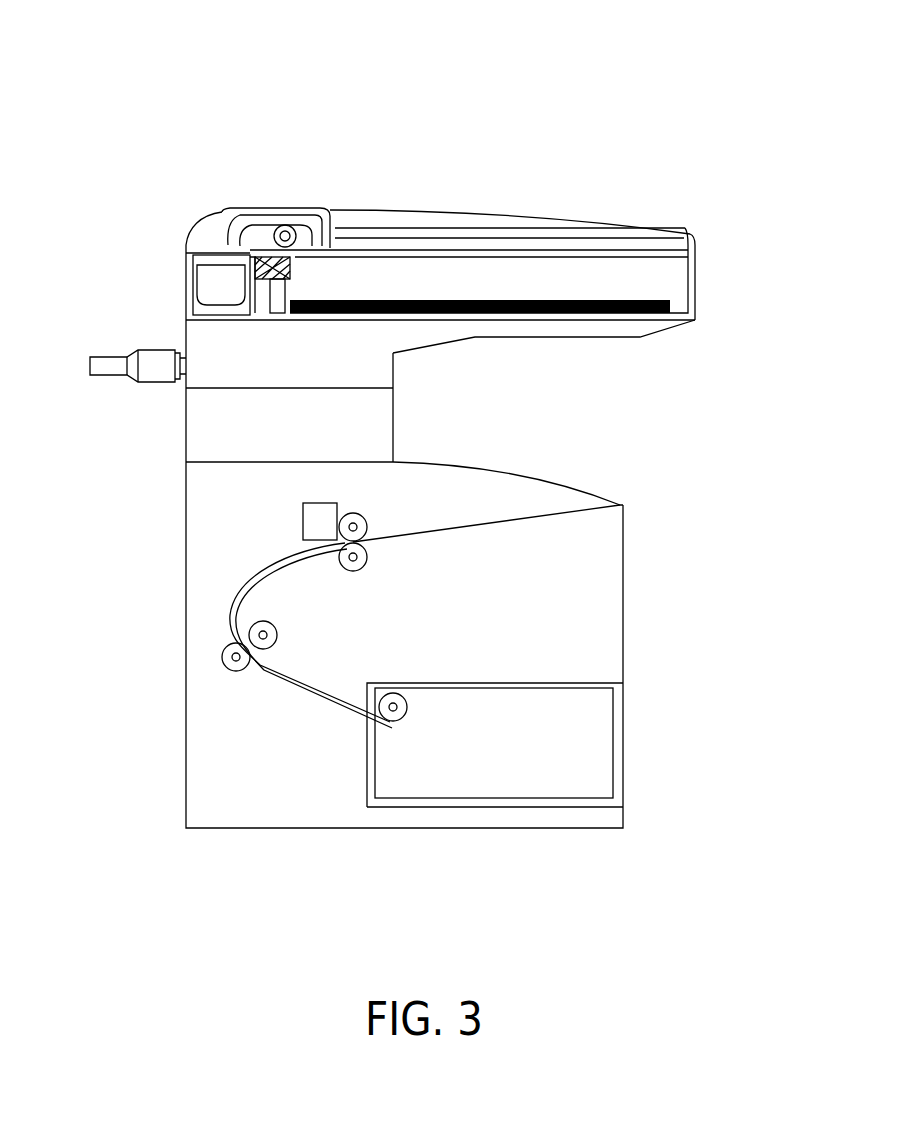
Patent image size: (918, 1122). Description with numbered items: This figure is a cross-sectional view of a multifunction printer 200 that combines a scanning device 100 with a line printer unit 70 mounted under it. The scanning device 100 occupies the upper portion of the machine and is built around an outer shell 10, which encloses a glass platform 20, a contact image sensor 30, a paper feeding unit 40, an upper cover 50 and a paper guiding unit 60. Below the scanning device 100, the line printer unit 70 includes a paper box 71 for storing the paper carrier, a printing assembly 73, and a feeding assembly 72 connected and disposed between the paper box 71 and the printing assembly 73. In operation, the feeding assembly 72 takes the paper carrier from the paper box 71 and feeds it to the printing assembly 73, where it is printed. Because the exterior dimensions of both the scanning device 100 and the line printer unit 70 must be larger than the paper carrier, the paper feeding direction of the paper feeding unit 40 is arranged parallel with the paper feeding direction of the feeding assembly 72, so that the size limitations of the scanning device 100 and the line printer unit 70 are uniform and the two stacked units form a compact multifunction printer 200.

The multifunction printer 200 is at (108, 66).
The scanning device 100 is at (182, 262).
The outer shell 10 is at (587, 320).
The glass platform 20 is at (698, 242).
The contact image sensor 30 is at (302, 269).
The paper feeding unit 40 is at (344, 206).
The upper cover 50 is at (545, 218).
The paper guiding unit 60 is at (206, 208).
The line printer unit 70 is at (166, 569).
The paper box 71 is at (580, 760).
The feeding assembly 72 is at (283, 672).
The printing assembly 73 is at (315, 530).